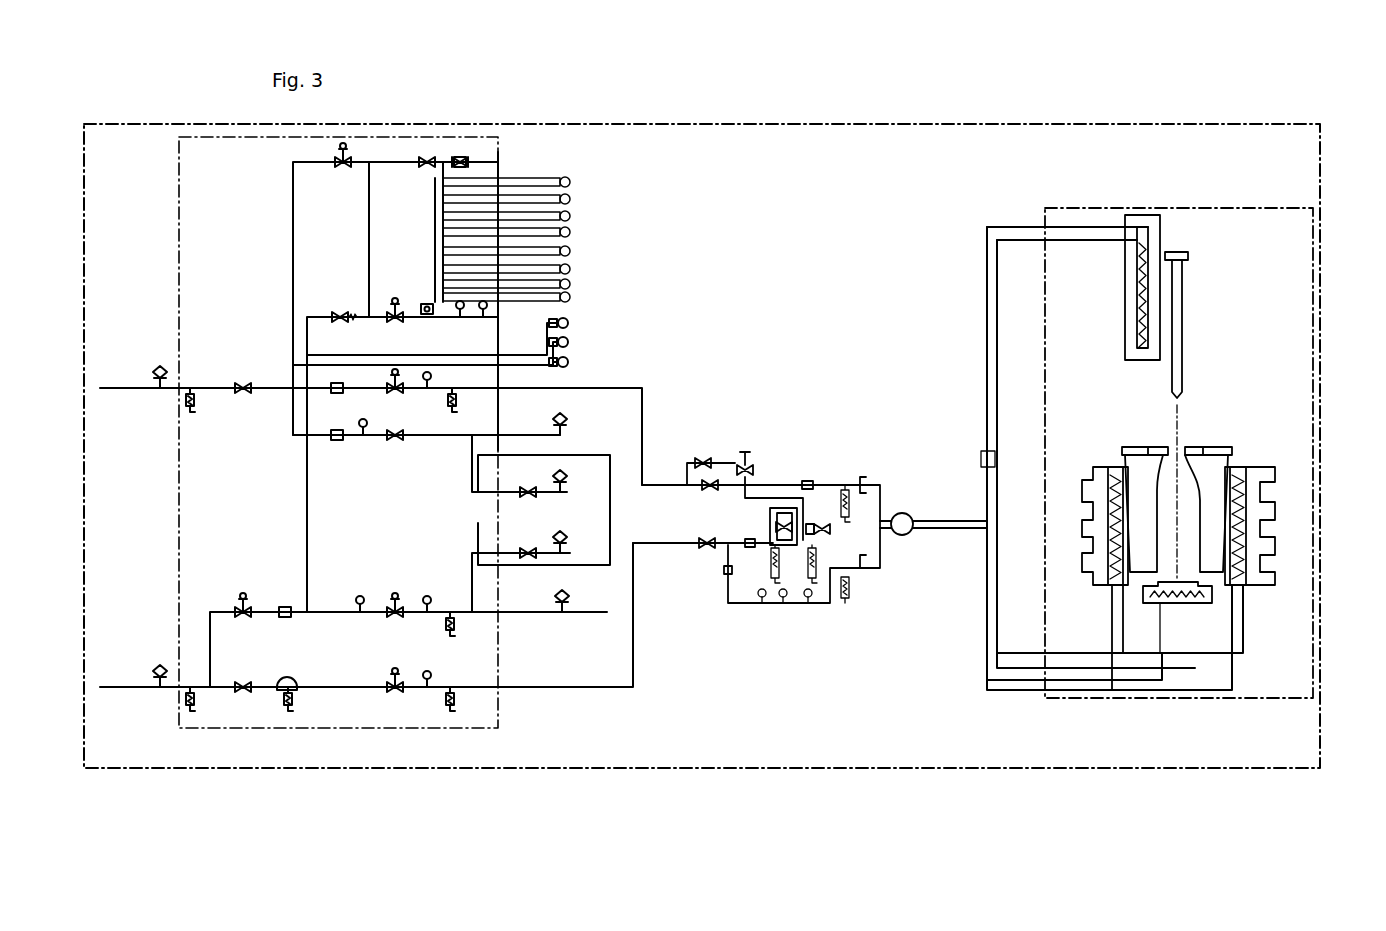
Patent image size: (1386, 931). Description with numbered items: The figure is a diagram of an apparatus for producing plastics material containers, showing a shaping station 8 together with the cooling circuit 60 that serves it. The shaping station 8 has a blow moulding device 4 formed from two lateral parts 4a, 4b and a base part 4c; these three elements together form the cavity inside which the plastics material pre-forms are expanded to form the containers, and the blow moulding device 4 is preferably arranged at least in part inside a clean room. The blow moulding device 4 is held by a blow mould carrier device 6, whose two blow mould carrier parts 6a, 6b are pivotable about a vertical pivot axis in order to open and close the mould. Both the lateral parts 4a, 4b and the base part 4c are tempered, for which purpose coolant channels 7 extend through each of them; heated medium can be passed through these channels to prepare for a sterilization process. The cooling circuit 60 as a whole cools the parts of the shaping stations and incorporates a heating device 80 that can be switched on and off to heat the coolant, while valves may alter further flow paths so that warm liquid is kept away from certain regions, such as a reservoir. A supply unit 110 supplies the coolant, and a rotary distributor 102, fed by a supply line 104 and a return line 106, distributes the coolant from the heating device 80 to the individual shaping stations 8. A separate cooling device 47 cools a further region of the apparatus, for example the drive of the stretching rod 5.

The blow moulding device 4 is at (1140, 540).
The lateral part 4a is at (1212, 465).
The lateral part 4b is at (1150, 477).
The base part 4c is at (1143, 593).
The stretching rod 5 is at (1182, 313).
The blow mould carrier device 6 is at (1147, 567).
The blow mould carrier part 6a is at (1270, 507).
The blow mould carrier part 6b is at (1090, 555).
The coolant channels 7 is at (1117, 512).
The shaping station 8 is at (1188, 425).
The cooling device 47 is at (1170, 228).
The cooling circuit 60 is at (767, 243).
The heating device 80 is at (764, 418).
The rotary distributor 102 is at (880, 520).
The supply line 104 is at (937, 529).
The return line 106 is at (933, 521).
The supply unit 110 is at (647, 281).